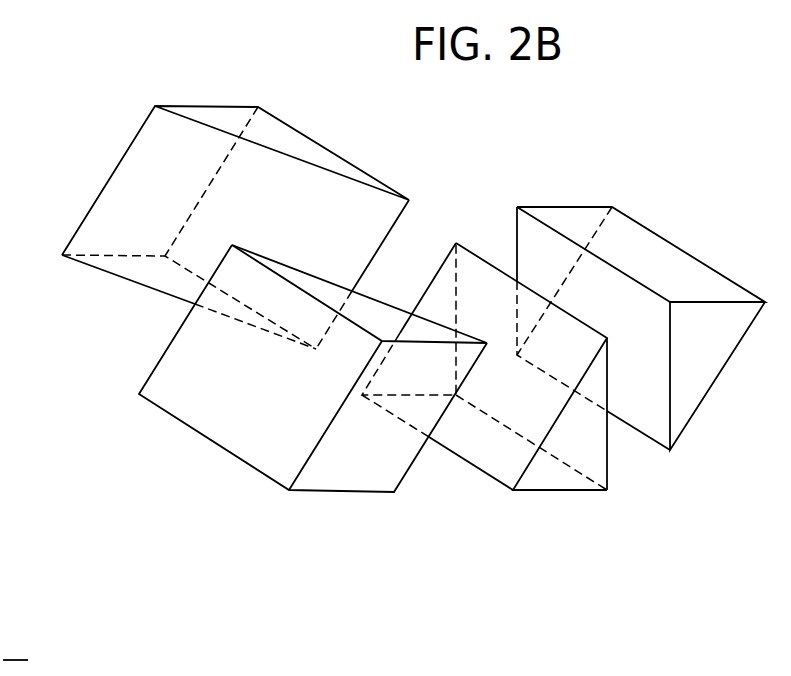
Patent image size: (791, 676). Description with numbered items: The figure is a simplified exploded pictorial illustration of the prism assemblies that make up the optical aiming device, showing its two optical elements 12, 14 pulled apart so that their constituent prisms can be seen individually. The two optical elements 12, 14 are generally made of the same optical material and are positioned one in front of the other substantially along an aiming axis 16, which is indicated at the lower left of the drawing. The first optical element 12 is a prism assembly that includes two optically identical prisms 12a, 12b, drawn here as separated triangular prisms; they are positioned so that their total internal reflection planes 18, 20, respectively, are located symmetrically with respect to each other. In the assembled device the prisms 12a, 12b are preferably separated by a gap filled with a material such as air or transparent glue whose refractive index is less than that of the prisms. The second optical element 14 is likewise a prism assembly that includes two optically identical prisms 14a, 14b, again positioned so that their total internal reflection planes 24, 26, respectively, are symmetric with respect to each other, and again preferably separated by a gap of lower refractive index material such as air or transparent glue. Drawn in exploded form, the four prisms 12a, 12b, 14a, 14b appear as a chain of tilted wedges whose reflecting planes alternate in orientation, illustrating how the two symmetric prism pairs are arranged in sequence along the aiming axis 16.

The optical element 12 is at (152, 310).
The prism 12a is at (332, 472).
The prism 12b is at (228, 118).
The optical element 14 is at (494, 200).
The prism 14a is at (542, 473).
The prism 14b is at (693, 380).
The aiming axis 16 is at (3, 660).
The total internal reflection plane 18 is at (370, 297).
The total internal reflection plane 20 is at (385, 218).
The total internal reflection plane 24 is at (613, 463).
The total internal reflection plane 26 is at (617, 287).